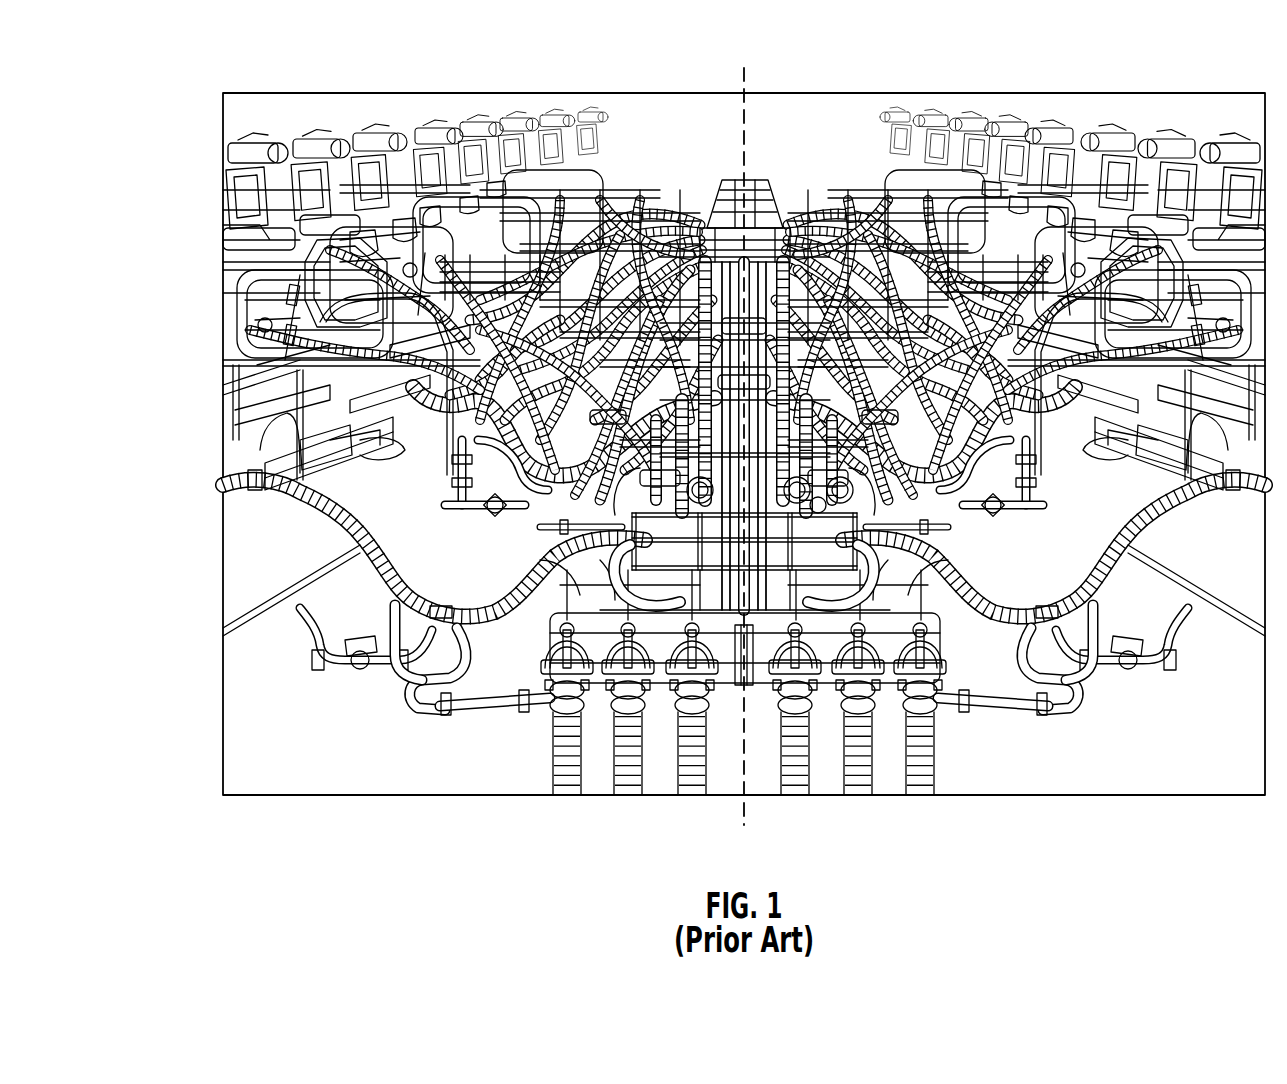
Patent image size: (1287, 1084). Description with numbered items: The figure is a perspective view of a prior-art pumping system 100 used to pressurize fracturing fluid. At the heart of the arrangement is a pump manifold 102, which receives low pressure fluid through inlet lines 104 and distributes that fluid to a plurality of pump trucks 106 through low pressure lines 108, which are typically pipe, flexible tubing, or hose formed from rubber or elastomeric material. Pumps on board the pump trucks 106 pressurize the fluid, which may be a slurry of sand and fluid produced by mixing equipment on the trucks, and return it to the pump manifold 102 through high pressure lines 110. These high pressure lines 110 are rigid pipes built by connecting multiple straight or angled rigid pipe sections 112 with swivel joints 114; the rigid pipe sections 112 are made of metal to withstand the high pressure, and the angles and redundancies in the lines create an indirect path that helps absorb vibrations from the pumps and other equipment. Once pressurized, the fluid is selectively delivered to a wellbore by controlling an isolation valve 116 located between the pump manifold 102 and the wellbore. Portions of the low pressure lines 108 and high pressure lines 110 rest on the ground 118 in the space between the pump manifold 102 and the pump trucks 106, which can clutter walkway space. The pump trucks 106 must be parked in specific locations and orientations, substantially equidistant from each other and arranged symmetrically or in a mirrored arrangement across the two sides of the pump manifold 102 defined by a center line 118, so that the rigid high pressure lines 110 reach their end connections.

The pumping system 100 is at (228, 78).
The pump manifold 102 is at (838, 450).
The inlet lines 104 is at (783, 817).
The pump trucks 106 is at (213, 130).
The low pressure lines 108 is at (213, 300).
The high pressure lines 110 is at (450, 488).
The rigid pipe sections 112 is at (493, 710).
The swivel joints 114 is at (413, 713).
The isolation valve 116 is at (752, 186).
The center line 118 is at (742, 133).